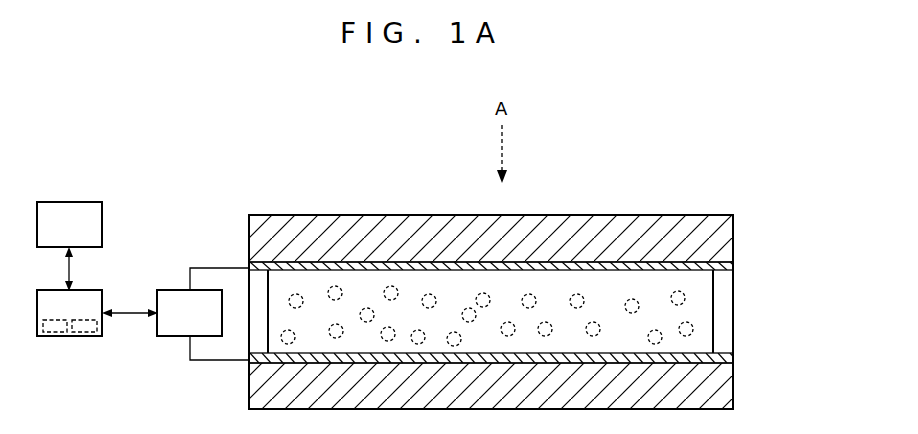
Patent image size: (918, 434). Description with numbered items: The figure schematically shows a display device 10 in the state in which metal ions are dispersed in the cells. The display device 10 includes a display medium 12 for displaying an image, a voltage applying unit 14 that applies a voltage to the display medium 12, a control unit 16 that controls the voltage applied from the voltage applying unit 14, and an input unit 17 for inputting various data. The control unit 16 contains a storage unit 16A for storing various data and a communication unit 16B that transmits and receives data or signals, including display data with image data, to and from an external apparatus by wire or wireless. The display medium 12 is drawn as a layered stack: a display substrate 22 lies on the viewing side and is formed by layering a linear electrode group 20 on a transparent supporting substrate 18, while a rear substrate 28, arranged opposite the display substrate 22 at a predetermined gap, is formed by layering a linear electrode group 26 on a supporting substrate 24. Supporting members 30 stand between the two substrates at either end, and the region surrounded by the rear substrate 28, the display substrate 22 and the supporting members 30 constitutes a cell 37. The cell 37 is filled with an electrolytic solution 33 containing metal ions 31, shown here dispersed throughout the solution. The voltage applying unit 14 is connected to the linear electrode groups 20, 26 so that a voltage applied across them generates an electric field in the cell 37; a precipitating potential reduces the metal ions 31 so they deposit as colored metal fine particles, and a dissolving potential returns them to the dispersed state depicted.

The display device 10 is at (514, 250).
The display medium 12 is at (567, 214).
The voltage applying unit 14 is at (173, 289).
The control unit 16 is at (101, 334).
The storage unit 16A is at (55, 334).
The communication unit 16B is at (92, 336).
The input unit 17 is at (82, 202).
The transparent supporting substrate 18 is at (724, 233).
The linear electrode group 20 is at (733, 270).
The display substrate 22 is at (540, 224).
The supporting substrate 24 is at (730, 388).
The linear electrode group 26 is at (733, 357).
The rear substrate 28 is at (540, 376).
The supporting members 30 is at (260, 326).
The metal ions 31 is at (686, 298).
The electrolytic solution 33 is at (714, 310).
The cell 37 is at (549, 306).